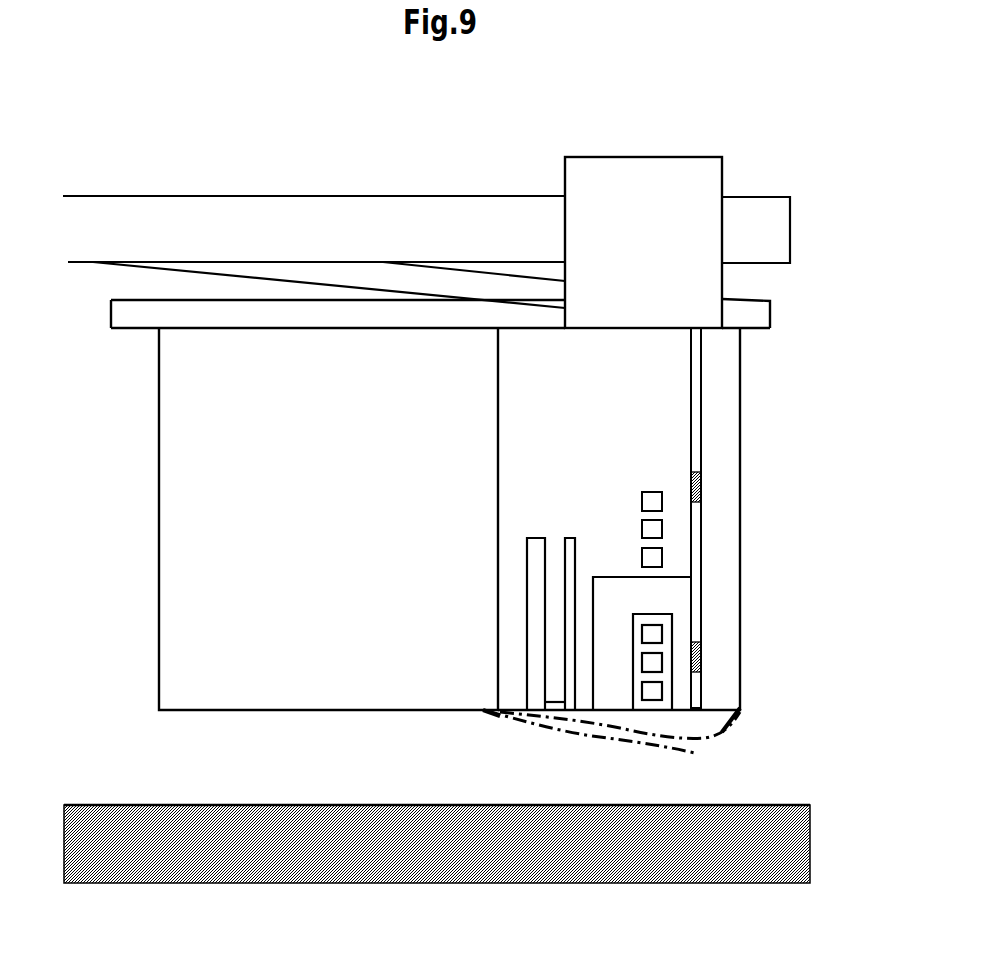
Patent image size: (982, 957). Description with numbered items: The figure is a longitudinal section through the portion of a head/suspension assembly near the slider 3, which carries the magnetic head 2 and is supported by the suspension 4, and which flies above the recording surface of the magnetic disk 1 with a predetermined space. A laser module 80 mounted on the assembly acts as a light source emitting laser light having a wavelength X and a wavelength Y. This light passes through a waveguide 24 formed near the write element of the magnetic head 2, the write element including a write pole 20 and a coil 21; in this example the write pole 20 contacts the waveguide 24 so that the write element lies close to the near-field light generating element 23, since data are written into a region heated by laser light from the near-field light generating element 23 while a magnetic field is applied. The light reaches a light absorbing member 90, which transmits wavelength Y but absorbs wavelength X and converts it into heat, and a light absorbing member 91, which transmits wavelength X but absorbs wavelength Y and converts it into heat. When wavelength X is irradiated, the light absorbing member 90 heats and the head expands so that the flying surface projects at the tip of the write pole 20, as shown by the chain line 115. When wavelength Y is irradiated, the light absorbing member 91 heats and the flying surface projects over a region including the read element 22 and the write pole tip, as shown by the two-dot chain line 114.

The magnetic disk 1 is at (247, 826).
The magnetic head 2 is at (625, 370).
The slider 3 is at (170, 650).
The suspension 4 is at (234, 205).
The write pole 20 is at (682, 609).
The coil 21 is at (653, 557).
The read element 22 is at (533, 705).
The near-field light generating element 23 is at (700, 703).
The waveguide 24 is at (697, 438).
The laser module 80 is at (625, 175).
The light absorbing member 90 is at (703, 658).
The light absorbing member 91 is at (703, 490).
The two-dot chain line 114 is at (600, 738).
The chain line 115 is at (690, 752).